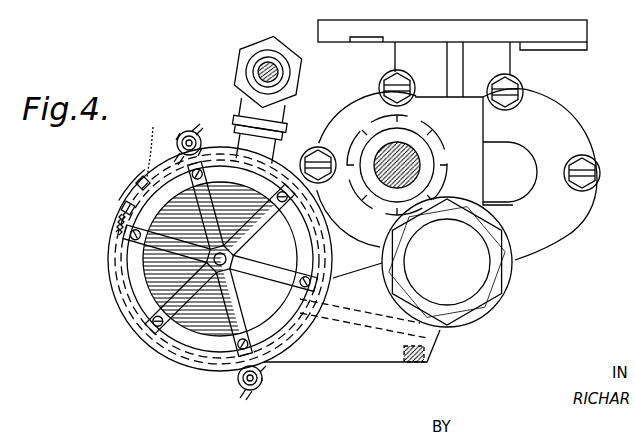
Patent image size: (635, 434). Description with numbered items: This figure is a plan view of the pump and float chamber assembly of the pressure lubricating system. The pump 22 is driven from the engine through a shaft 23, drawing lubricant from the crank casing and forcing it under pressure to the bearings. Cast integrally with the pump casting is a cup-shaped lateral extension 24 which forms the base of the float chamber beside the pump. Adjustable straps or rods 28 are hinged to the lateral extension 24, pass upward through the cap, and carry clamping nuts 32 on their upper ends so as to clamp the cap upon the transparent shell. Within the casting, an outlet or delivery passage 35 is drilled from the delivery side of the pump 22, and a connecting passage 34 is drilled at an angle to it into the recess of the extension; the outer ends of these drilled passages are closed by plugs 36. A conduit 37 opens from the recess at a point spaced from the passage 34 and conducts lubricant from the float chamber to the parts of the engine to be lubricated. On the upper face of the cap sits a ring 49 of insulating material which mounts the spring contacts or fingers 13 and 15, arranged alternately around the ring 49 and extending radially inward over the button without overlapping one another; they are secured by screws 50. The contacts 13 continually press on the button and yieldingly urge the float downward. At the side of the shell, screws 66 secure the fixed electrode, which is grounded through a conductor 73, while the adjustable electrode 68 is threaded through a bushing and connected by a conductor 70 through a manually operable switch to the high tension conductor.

The contacts or fingers 13 is at (220, 237).
The contacts or fingers 15 is at (198, 259).
The pump 22 is at (515, 192).
The shaft 23 is at (382, 169).
The lateral extension 24 is at (314, 357).
The adjustable straps or rods 28 is at (189, 138).
The clamping nuts 32 is at (196, 131).
The connecting passage 34 is at (370, 336).
The outlet or delivery passage 35 is at (440, 332).
The plugs 36 is at (408, 364).
The conduit 37 is at (257, 71).
The ring 49 is at (177, 350).
The screws 50 is at (127, 247).
The screws 66 is at (139, 181).
The electrode 68 is at (125, 207).
The conductor 70 is at (112, 235).
The conductor 73 is at (152, 131).